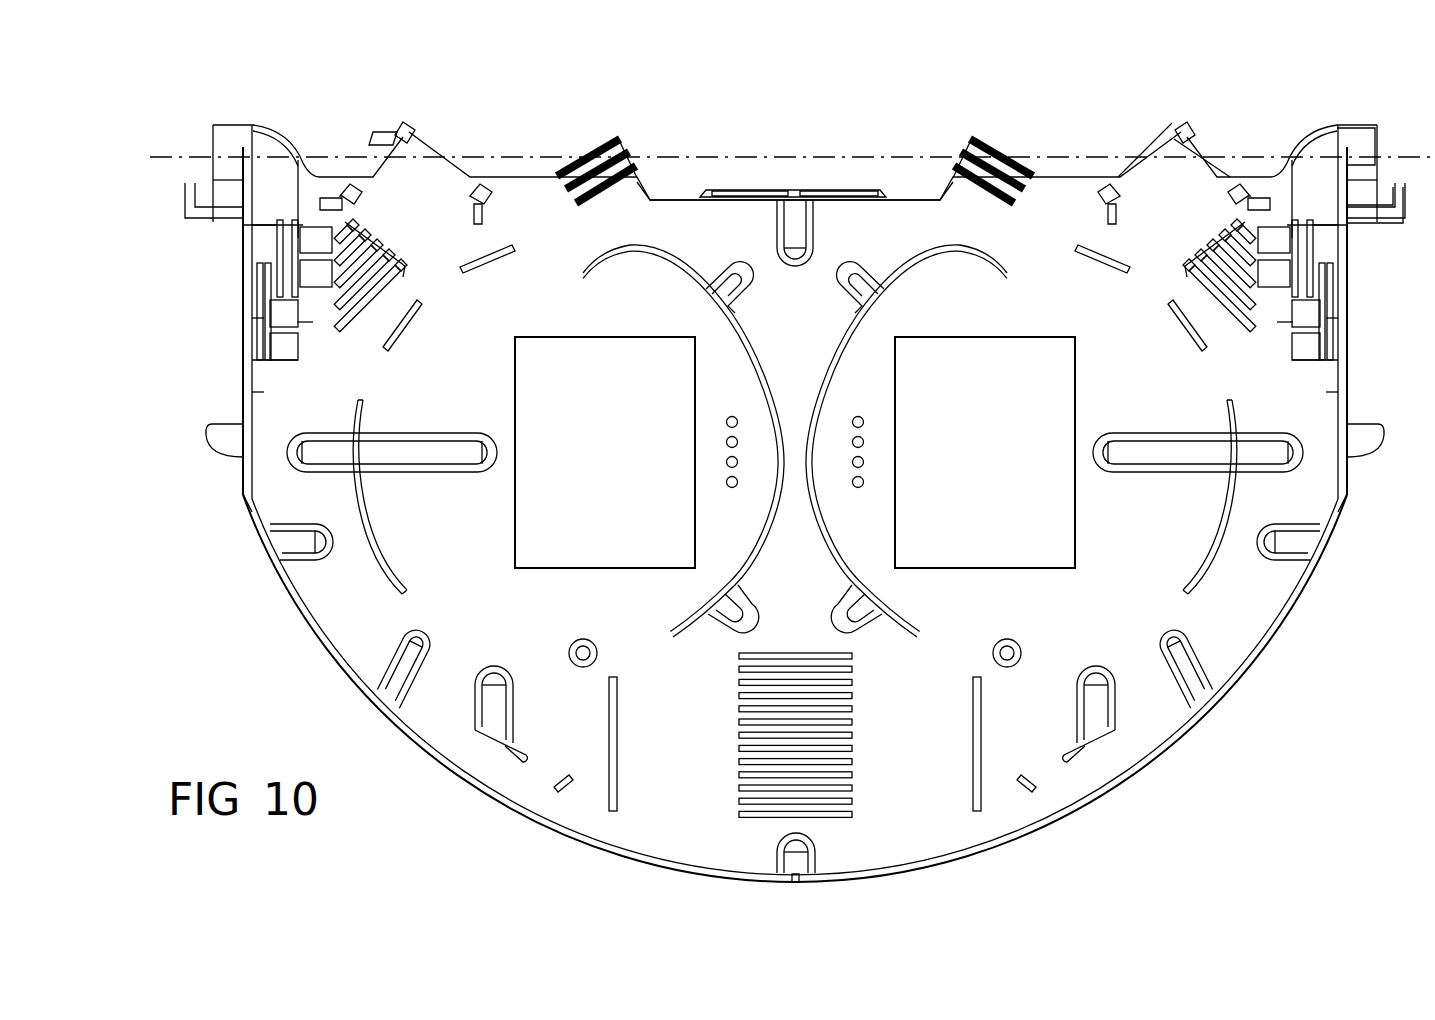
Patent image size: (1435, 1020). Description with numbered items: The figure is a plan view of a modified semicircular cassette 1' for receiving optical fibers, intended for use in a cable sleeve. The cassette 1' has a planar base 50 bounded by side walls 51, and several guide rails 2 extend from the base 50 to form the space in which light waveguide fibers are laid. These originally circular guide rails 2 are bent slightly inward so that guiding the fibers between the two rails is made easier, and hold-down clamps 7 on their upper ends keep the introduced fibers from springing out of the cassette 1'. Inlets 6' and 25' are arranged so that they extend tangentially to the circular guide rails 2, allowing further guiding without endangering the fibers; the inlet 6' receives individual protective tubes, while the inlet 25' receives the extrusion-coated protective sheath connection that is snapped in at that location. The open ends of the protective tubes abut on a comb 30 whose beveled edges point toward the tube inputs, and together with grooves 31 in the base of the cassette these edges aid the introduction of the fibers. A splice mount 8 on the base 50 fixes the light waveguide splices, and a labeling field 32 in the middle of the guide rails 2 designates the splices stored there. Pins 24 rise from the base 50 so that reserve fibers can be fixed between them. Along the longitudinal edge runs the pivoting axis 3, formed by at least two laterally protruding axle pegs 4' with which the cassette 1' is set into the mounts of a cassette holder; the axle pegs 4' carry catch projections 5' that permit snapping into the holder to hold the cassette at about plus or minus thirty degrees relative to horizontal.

The semicircular cassette 1' is at (795, 516).
The guide rails 2 is at (832, 357).
The pivoting axis 3 is at (903, 160).
The axle pegs 4' is at (1358, 115).
The catch projections 5' is at (1382, 163).
The inlet 6' is at (795, 141).
The hold-down clamps 7 is at (290, 545).
The splice mount 8 is at (853, 760).
The pins 24 is at (732, 487).
The inlet 25' is at (1174, 138).
The comb 30 is at (392, 250).
The grooves 31 is at (372, 307).
The labeling field 32 is at (632, 525).
The base 50 is at (691, 713).
The side walls 51 is at (470, 770).